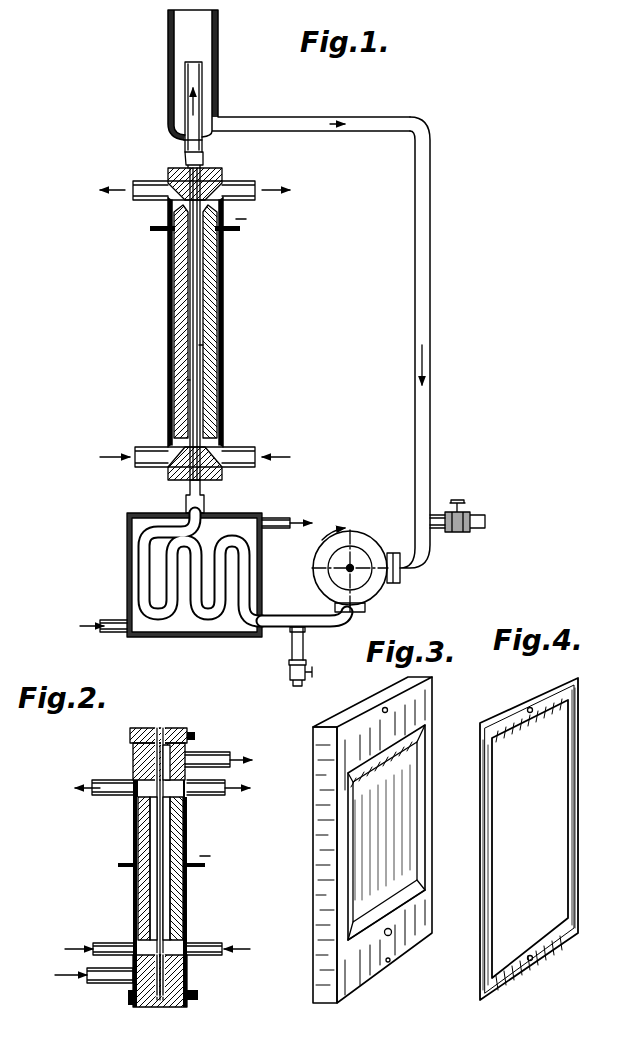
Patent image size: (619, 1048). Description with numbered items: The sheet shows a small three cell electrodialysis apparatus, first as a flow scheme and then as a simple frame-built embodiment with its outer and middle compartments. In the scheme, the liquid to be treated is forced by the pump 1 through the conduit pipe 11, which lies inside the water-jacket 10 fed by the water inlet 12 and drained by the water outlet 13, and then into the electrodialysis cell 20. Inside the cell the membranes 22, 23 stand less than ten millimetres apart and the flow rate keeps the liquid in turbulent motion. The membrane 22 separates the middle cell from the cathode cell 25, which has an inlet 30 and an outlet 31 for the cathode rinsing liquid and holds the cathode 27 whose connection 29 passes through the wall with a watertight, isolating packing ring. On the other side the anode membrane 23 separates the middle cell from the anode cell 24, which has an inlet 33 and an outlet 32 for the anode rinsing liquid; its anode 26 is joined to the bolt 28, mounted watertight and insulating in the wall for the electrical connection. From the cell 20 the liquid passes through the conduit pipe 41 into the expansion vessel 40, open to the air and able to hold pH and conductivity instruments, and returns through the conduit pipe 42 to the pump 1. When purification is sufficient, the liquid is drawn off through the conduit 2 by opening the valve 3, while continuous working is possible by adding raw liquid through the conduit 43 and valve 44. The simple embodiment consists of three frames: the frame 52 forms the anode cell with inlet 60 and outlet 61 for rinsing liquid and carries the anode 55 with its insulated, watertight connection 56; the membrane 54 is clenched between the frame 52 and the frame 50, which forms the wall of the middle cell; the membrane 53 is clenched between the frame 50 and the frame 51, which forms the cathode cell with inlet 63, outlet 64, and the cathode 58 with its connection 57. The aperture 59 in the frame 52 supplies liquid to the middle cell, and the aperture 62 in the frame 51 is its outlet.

In FIG. 1, the pump 1 is at (377, 588).
In FIG. 1, the conduit 2 is at (304, 642).
In FIG. 1, the valve 3 is at (289, 670).
In FIG. 1, the water-jacket 10 is at (165, 637).
In FIG. 1, the conduit pipe 11 is at (222, 626).
In FIG. 1, the water inlet 12 is at (112, 634).
In FIG. 1, the water outlet 13 is at (275, 517).
In FIG. 1, the electrodialysis cell 20 is at (197, 275).
In FIG. 1, the membrane 22 is at (199, 317).
In FIG. 1, the anode membrane 23 is at (182, 382).
In FIG. 1, the anode cell 24 is at (185, 300).
In FIG. 1, the cathode cell 25 is at (201, 347).
In FIG. 1, the anode 26 is at (172, 252).
In FIG. 1, the cathode 27 is at (213, 395).
In FIG. 1, the bolt 28 is at (150, 228).
In FIG. 1, the connection 29 is at (240, 228).
In FIG. 1, the inlet 30 is at (257, 457).
In FIG. 1, the outlet 31 is at (247, 190).
In FIG. 1, the outlet 32 is at (145, 182).
In FIG. 1, the inlet 33 is at (137, 463).
In FIG. 1, the expansion vessel 40 is at (170, 104).
In FIG. 1, the conduit pipe 41 is at (203, 78).
In FIG. 1, the conduit pipe 42 is at (329, 128).
In FIG. 1, the conduit 43 is at (438, 531).
In FIG. 1, the valve 44 is at (466, 516).
In FIG. 2, the frame 50 is at (160, 728).
In FIG. 4, the frame 50 is at (561, 686).
In FIG. 2, the frame 51 is at (189, 732).
In FIG. 2, the frame 52 is at (137, 758).
In FIG. 3, the frame 52 is at (330, 754).
In FIG. 2, the membrane 53 is at (165, 842).
In FIG. 2, the membrane 54 is at (150, 832).
In FIG. 2, the anode 55 is at (140, 897).
In FIG. 3, the anode 55 is at (413, 757).
In FIG. 2, the connection 56 is at (120, 866).
In FIG. 2, the connection 57 is at (205, 865).
In FIG. 2, the cathode 58 is at (178, 912).
In FIG. 2, the aperture 59 is at (133, 1000).
In FIG. 3, the aperture 59 is at (391, 935).
In FIG. 2, the inlet 60 is at (140, 946).
In FIG. 3, the inlet 60 is at (352, 925).
In FIG. 2, the outlet 61 is at (145, 789).
In FIG. 2, the aperture 62 is at (205, 757).
In FIG. 2, the inlet 63 is at (205, 950).
In FIG. 2, the outlet 64 is at (212, 796).